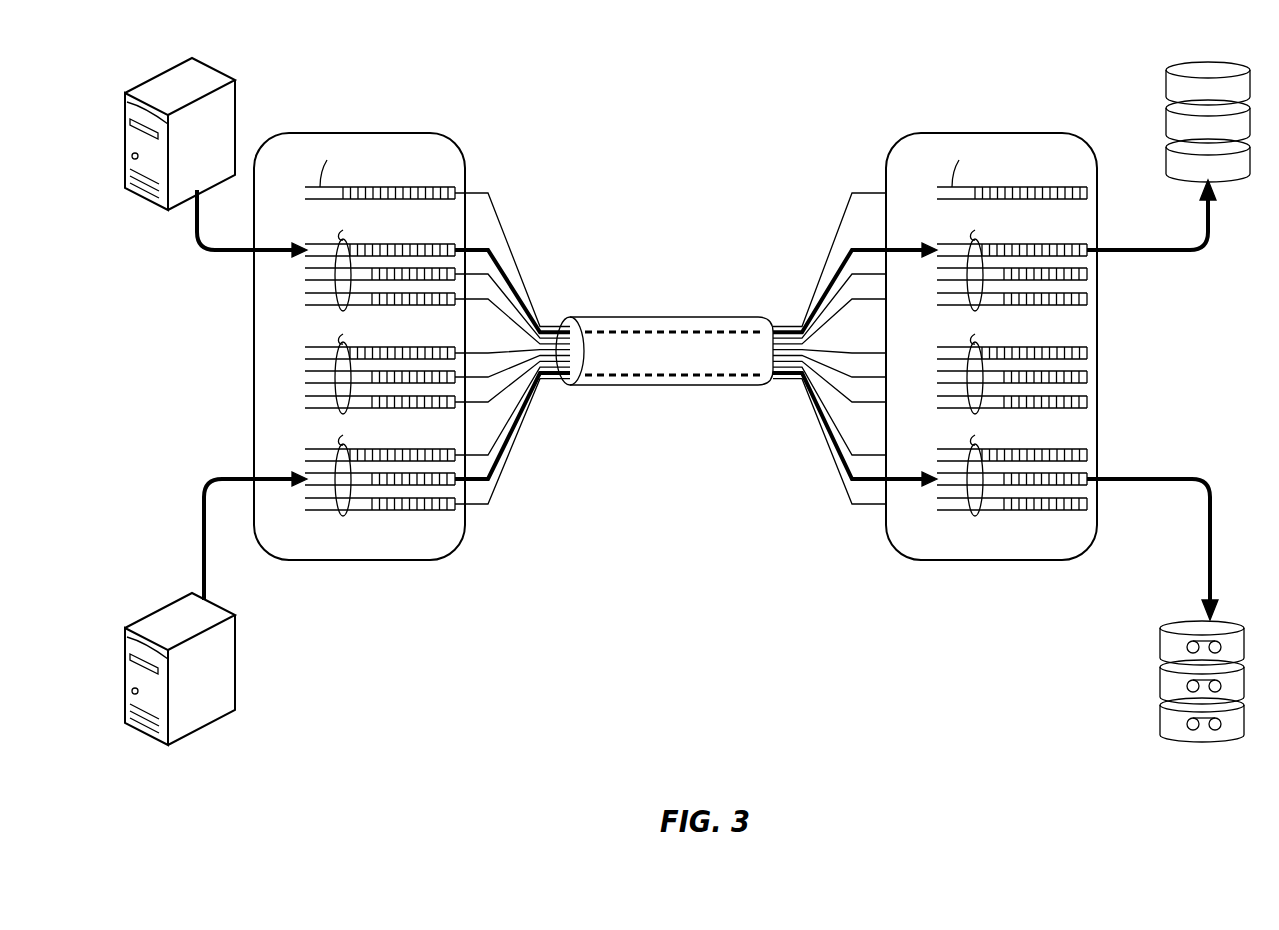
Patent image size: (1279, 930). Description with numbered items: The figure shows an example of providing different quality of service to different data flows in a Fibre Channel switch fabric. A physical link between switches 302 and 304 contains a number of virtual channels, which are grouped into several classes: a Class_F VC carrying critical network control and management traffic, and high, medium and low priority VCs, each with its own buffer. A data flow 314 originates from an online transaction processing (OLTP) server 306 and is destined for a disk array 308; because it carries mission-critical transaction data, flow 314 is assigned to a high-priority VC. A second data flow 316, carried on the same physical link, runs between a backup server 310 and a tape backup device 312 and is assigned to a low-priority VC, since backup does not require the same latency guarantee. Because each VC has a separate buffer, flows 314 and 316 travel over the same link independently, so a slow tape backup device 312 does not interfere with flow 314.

The switch 302 is at (412, 346).
The switch 304 is at (935, 346).
The online transaction processing (OLTP) server 306 is at (213, 68).
The disk array 308 is at (1193, 63).
The backup server 310 is at (235, 683).
The tape backup device 312 is at (1175, 738).
The data flow 314 is at (1187, 278).
The data flow 316 is at (1195, 478).